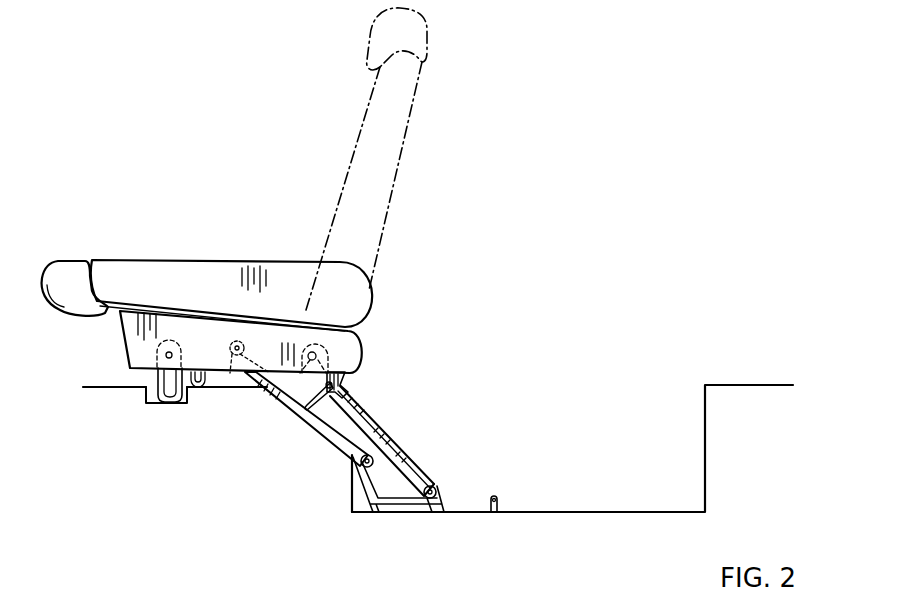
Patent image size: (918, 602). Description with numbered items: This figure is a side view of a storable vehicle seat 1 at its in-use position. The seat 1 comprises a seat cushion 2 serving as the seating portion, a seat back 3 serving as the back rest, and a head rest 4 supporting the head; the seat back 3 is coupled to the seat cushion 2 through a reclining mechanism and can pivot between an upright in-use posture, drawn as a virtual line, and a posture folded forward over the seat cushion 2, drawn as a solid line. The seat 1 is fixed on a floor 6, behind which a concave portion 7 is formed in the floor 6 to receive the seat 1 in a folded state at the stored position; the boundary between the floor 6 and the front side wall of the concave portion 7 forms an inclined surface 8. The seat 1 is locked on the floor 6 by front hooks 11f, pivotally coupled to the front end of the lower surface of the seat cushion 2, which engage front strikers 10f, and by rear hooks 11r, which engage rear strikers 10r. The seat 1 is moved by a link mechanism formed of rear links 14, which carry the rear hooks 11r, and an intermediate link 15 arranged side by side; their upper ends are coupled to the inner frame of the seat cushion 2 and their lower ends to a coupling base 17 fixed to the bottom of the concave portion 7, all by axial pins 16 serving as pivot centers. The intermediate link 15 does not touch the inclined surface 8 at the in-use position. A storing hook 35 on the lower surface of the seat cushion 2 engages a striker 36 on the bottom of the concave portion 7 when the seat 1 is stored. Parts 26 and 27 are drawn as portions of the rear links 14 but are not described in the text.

The seat 1 is at (386, 273).
The seat cushion 2 is at (135, 345).
The seat back 3 is at (200, 280).
The head rest 4 is at (66, 280).
The floor 6 is at (108, 388).
The concave portion 7 is at (613, 513).
The inclined surface 8 is at (334, 405).
The front strikers 10f is at (159, 404).
The rear strikers 10r is at (320, 397).
The front hooks 11f is at (155, 380).
The rear hooks 11r is at (307, 393).
The rear links 14 is at (405, 433).
The intermediate link 15 is at (340, 457).
The axial pins 16 is at (332, 346).
The coupling base 17 is at (402, 503).
The first link 26 is at (352, 395).
The second link 27 is at (388, 446).
The storing hook 35 is at (197, 388).
The striker 36 is at (498, 502).